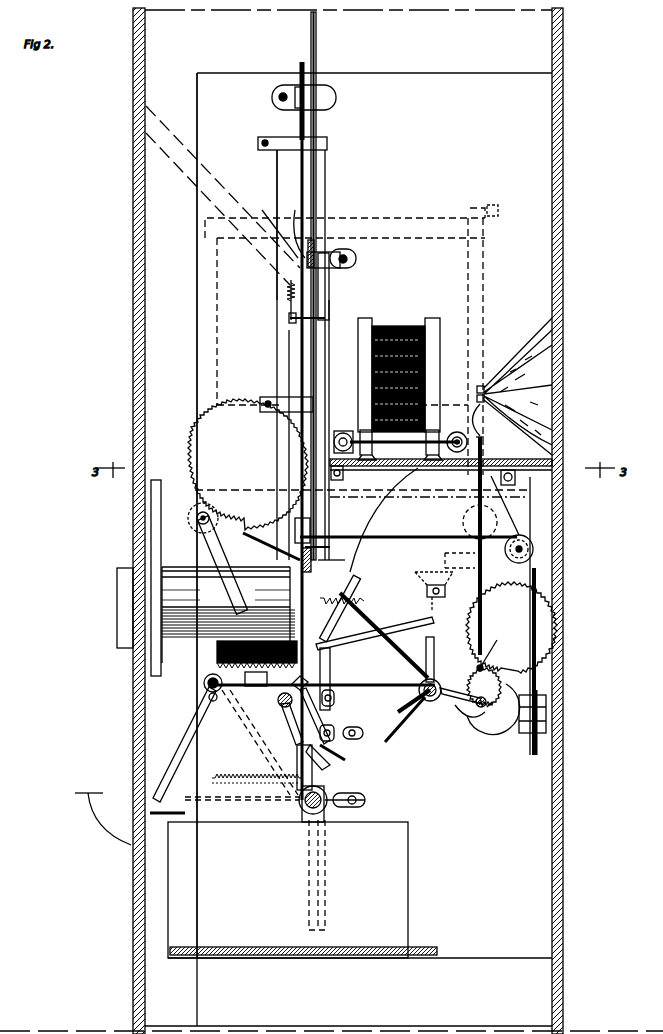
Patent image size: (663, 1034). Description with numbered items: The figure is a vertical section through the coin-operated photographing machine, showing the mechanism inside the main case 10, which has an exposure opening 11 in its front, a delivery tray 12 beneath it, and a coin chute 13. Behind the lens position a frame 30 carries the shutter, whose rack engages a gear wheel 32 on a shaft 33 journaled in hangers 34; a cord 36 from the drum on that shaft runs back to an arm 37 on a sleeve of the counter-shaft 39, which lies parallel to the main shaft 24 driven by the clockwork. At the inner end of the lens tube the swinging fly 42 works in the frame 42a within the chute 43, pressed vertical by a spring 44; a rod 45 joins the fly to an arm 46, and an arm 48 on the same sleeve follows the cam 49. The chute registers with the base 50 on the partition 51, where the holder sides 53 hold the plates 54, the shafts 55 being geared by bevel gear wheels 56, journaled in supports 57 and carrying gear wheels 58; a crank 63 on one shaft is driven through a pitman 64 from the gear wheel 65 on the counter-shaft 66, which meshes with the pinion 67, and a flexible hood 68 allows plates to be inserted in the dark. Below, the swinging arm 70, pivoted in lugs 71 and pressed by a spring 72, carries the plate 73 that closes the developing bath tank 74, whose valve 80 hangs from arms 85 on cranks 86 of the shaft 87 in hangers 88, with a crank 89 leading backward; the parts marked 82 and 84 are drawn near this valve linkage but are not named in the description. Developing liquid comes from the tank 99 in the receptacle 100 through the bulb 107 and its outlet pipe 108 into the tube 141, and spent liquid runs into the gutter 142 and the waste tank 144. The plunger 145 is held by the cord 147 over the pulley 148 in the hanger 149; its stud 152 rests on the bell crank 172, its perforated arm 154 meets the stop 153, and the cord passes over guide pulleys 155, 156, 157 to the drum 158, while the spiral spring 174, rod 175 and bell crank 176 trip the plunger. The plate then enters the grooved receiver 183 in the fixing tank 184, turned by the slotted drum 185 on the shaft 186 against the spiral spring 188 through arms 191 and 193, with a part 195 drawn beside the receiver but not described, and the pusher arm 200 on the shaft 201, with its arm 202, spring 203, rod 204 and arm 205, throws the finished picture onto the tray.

The main case 10 is at (556, 782).
The exposure opening 11 is at (117, 610).
The delivery tray 12 is at (130, 819).
The coin chute 13 is at (158, 118).
The main shaft 24 is at (488, 714).
The frame 30 is at (160, 475).
The gear wheel 32 is at (222, 480).
The shaft 33 is at (200, 518).
The hangers 34 is at (240, 592).
The cord 36 is at (262, 542).
The arm 37 is at (434, 645).
The counter-shaft 39 is at (430, 702).
The swinging fly 42 is at (356, 580).
The frame 42a is at (345, 560).
The chute 43 is at (384, 520).
The spring 44 is at (346, 612).
The rod 45 is at (395, 636).
The arm 46 is at (437, 690).
The arm 48 is at (478, 716).
The cam 49 is at (505, 726).
The base 50 is at (452, 466).
The partition 51 is at (514, 465).
The sides 53 is at (368, 322).
The plates 54 is at (400, 326).
The shafts 55 is at (420, 466).
The bevel gear wheels 56 is at (341, 433).
The supports 57 is at (458, 430).
The gear wheels 58 is at (362, 436).
The crank 63 is at (483, 425).
The pitman 64 is at (482, 580).
The gear wheel 65 is at (491, 647).
The counter-shaft 66 is at (511, 627).
The pinion 67 is at (500, 690).
The flexible hood 68 is at (500, 378).
The swinging arm 70 is at (313, 716).
The lugs 71 is at (336, 696).
The spring 72 is at (359, 680).
The plate 73 is at (328, 655).
The developing bath tank 74 is at (325, 675).
The valve 80 is at (344, 754).
The pivot 82 is at (357, 738).
The pivot 84 is at (348, 726).
The arms 85 is at (330, 761).
The cranks 86 is at (287, 724).
The shaft 87 is at (278, 700).
The hangers 88 is at (296, 767).
The crank 89 is at (229, 617).
The developing tank 99 is at (351, 340).
The receptacle 100 is at (240, 515).
The bulb 107 is at (465, 518).
The outlet pipe 108 is at (445, 560).
The tube 141 is at (438, 614).
The gutter 142 is at (290, 768).
The waste tank 144 is at (328, 330).
The plunger 145 is at (330, 366).
The cord 147 is at (300, 140).
The pulley 148 is at (300, 78).
The hanger 149 is at (330, 93).
The stud 152 is at (302, 164).
The stop 153 is at (273, 225).
The perforated arm 154 is at (319, 235).
The guide pulley 155 is at (295, 525).
The guide pulley 156 is at (312, 542).
The guide pulley 157 is at (518, 563).
The drum 158 is at (538, 746).
The bell crank 172 is at (290, 314).
The spiral spring 174 is at (287, 292).
The rod 175 is at (295, 382).
The bell crank 176 is at (285, 679).
The grooved receiver 183 is at (365, 805).
The tank 184 is at (360, 890).
The slotted drum 185 is at (375, 796).
The shaft 186 is at (308, 812).
The spiral spring 188 is at (262, 790).
The arm 191 is at (405, 719).
The arm 193 is at (456, 712).
The rod 195 is at (330, 848).
The pusher arm 200 is at (188, 739).
The shaft 201 is at (208, 690).
The arm 202 is at (205, 672).
The spring 203 is at (247, 676).
The rod 204 is at (245, 700).
The arm 205 is at (411, 701).